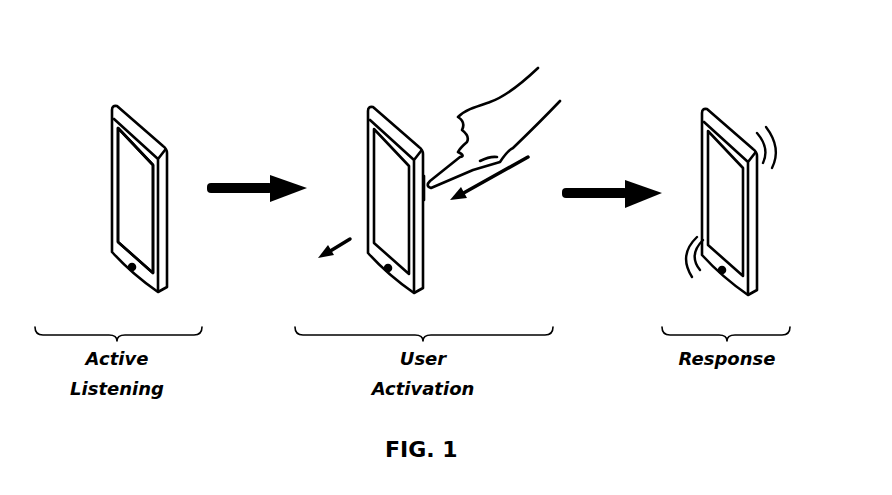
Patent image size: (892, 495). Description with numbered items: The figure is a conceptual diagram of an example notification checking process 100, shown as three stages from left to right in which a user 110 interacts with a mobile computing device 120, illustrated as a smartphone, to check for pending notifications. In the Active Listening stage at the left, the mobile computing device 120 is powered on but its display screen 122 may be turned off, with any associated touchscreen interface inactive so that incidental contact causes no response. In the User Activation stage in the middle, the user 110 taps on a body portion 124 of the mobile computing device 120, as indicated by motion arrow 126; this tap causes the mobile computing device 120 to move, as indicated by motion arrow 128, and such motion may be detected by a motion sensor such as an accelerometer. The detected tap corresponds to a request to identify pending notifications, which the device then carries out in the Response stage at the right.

The notification checking process 100 is at (77, 61).
The user 110 is at (518, 85).
The mobile computing device 120 is at (150, 123).
The display screen 122 is at (133, 188).
The body portion 124 is at (425, 190).
The motion arrow 126 is at (499, 178).
The motion arrow 128 is at (345, 255).